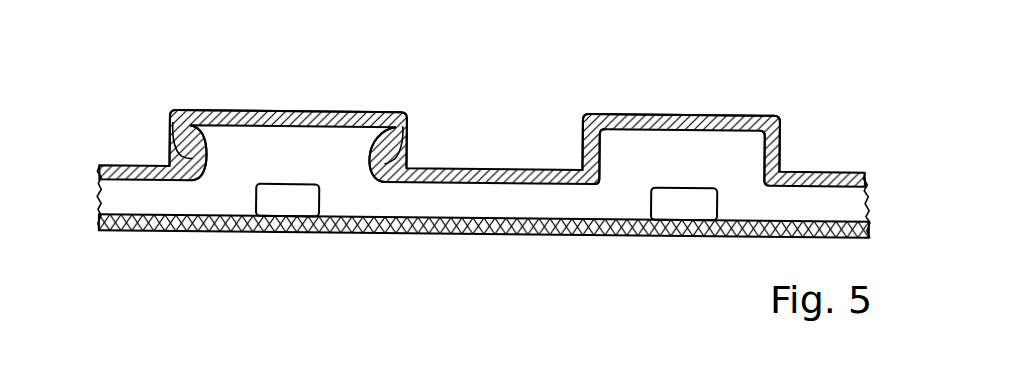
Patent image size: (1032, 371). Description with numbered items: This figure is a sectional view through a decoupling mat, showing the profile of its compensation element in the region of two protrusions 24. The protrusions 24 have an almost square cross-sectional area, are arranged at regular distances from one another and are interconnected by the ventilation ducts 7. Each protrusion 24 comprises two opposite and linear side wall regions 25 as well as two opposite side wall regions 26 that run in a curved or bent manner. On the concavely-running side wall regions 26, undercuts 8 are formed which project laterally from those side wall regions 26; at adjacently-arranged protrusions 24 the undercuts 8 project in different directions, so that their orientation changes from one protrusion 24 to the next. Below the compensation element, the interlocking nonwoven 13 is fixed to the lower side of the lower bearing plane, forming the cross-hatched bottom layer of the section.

The undercut 8 is at (163, 111).
The protrusion 24 is at (290, 112).
The side wall region running in a curved or bent manner 26 is at (193, 157).
The linear side wall region 25 is at (590, 152).
The ventilation duct 7 is at (847, 203).
The interlocking nonwoven 13 is at (392, 222).